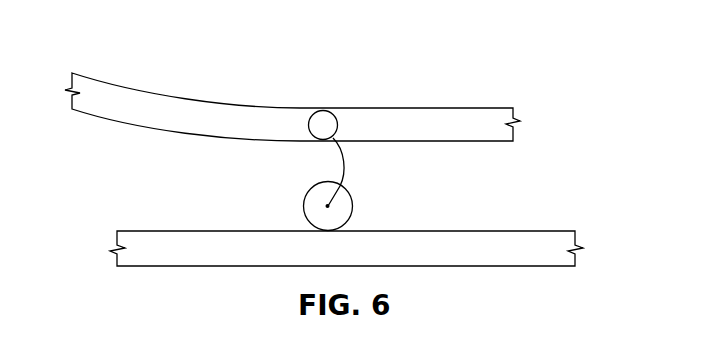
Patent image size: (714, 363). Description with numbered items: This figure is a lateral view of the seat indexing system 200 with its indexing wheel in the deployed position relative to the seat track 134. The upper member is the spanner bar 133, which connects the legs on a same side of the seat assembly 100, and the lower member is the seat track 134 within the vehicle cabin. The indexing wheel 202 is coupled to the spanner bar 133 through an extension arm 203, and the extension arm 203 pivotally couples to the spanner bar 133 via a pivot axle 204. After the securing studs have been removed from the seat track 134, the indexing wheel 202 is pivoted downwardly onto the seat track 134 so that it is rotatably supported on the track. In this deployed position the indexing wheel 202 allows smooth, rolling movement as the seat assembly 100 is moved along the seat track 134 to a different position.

The seat assembly 100 is at (288, 81).
The spanner bar 133 is at (447, 108).
The seat track 134 is at (480, 231).
The seat indexing system 200 is at (365, 125).
The indexing wheel 202 is at (353, 206).
The extension arm 203 is at (345, 162).
The pivot axle 204 is at (318, 110).